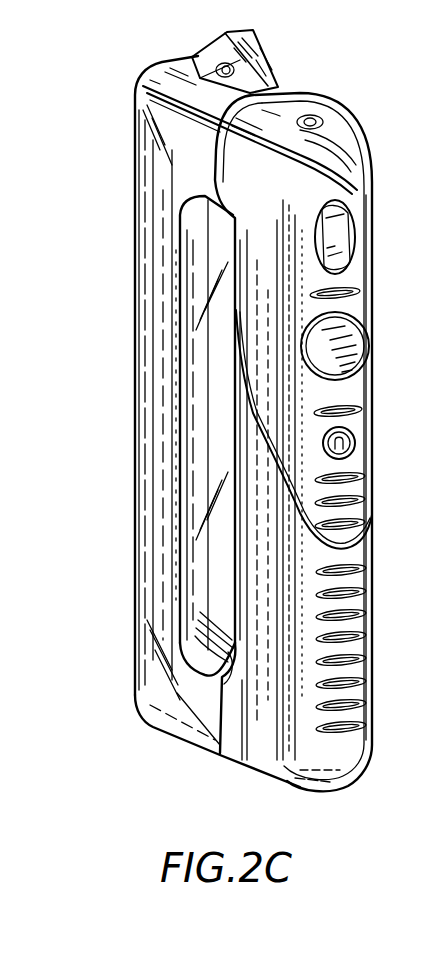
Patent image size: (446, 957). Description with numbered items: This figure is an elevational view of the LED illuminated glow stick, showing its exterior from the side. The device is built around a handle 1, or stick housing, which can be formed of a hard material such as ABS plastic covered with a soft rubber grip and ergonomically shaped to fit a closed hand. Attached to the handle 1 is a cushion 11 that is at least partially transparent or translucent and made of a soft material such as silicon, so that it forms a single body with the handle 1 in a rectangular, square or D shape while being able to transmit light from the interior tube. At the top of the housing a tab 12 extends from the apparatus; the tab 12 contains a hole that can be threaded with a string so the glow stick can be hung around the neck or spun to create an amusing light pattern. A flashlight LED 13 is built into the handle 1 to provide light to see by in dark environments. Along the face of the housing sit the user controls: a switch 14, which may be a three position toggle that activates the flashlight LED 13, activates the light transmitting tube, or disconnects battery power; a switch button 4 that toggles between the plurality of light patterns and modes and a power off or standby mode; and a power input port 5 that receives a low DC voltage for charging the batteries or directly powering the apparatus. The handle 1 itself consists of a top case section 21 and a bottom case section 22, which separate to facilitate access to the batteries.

The handle 1 is at (367, 772).
The cushion 11 is at (132, 492).
The tab 12 is at (270, 38).
The flashlight LED 13 is at (323, 117).
The switch 14 is at (345, 232).
The switch button 4 is at (350, 340).
The power input port 5 is at (348, 440).
The top case section 21 is at (360, 510).
The bottom case section 22 is at (367, 663).